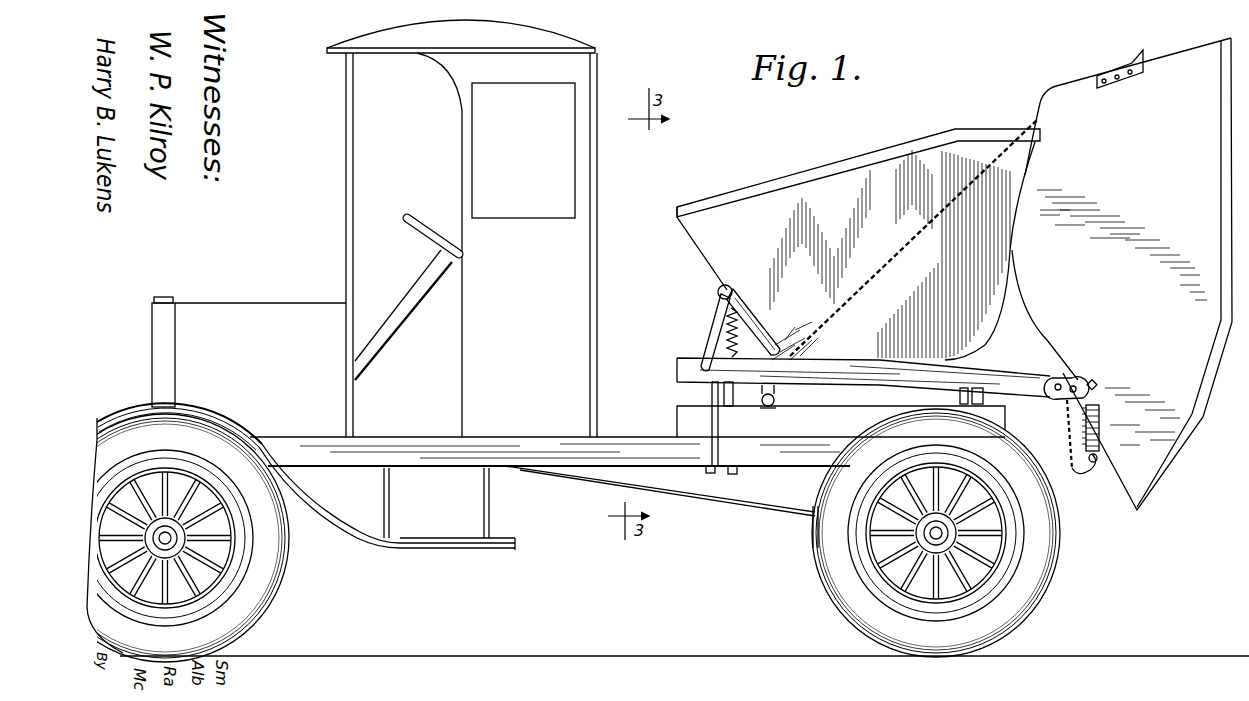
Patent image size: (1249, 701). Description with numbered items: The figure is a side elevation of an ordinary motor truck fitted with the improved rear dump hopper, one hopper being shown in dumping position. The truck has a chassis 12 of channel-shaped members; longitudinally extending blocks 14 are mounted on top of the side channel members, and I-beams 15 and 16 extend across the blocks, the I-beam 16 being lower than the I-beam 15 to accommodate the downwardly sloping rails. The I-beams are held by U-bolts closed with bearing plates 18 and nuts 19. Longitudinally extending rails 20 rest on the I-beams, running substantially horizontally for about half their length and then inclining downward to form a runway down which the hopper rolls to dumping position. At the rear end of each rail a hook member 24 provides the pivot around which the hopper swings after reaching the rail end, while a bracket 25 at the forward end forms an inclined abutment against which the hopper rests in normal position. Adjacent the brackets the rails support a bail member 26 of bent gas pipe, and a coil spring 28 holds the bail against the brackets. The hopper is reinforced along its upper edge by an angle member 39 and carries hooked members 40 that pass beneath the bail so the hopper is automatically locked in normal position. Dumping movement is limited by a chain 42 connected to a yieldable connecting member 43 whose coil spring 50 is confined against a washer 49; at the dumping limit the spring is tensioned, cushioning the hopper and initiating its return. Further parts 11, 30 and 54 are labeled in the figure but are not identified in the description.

The frame 11 is at (718, 459).
The chassis 12 is at (576, 470).
The longitudinally extending blocks 14 is at (688, 412).
The I-beam 15 is at (711, 395).
The I-beam 16 is at (958, 393).
The bearing plates 18 is at (735, 470).
The nuts 19 is at (711, 471).
The longitudinally extending rails 20 is at (846, 384).
The hook member 24 is at (1053, 377).
The bracket 25 is at (744, 300).
The bail member 26 is at (716, 322).
The coil spring 28 is at (722, 340).
The dump body 30 is at (732, 212).
The angle members 39 is at (842, 169).
The hooked members 40 is at (718, 290).
The chain 42 is at (925, 228).
The yieldable connecting member 43 is at (776, 404).
The washer 49 is at (1088, 471).
The coil spring 50 is at (1098, 436).
The chain 54 is at (1066, 427).